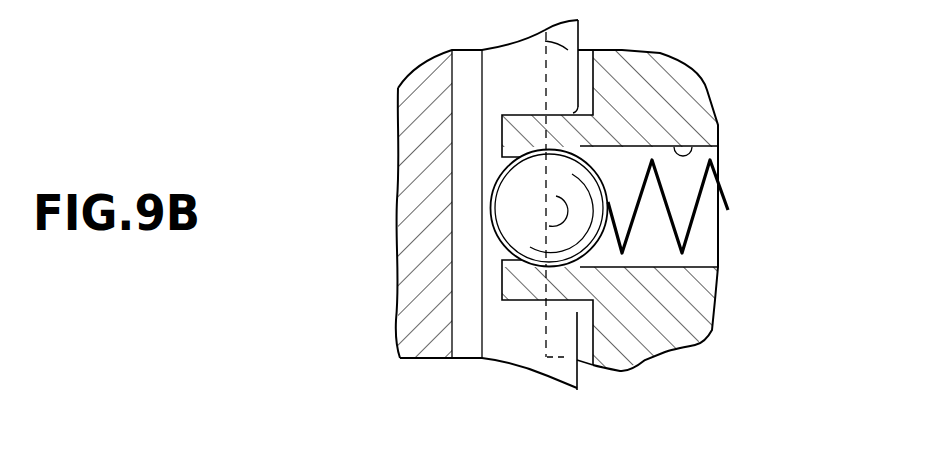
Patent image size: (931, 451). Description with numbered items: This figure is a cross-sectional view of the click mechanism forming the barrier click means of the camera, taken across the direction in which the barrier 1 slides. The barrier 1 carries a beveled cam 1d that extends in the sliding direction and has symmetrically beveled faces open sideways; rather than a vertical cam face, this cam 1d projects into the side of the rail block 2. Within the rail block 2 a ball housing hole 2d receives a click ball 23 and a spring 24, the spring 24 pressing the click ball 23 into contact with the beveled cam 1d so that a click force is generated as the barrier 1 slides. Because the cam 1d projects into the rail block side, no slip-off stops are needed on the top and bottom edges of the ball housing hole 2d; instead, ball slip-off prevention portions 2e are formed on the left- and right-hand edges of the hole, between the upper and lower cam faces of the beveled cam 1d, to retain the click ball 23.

The barrier 1 is at (410, 98).
The beveled cam 1d is at (525, 333).
The rail block 2 is at (554, 202).
The ball housing hole 2d is at (715, 130).
The ball slip-off prevention portion 2e is at (502, 146).
The click ball 23 is at (490, 237).
The spring 24 is at (713, 227).